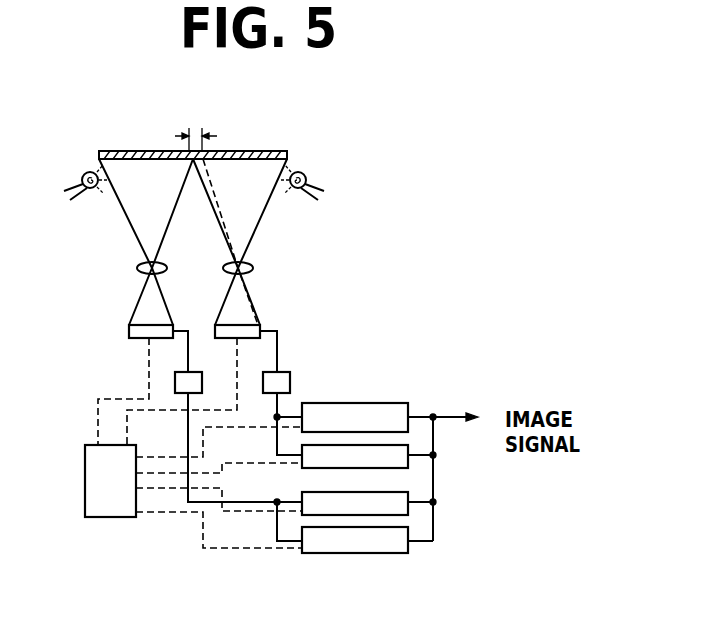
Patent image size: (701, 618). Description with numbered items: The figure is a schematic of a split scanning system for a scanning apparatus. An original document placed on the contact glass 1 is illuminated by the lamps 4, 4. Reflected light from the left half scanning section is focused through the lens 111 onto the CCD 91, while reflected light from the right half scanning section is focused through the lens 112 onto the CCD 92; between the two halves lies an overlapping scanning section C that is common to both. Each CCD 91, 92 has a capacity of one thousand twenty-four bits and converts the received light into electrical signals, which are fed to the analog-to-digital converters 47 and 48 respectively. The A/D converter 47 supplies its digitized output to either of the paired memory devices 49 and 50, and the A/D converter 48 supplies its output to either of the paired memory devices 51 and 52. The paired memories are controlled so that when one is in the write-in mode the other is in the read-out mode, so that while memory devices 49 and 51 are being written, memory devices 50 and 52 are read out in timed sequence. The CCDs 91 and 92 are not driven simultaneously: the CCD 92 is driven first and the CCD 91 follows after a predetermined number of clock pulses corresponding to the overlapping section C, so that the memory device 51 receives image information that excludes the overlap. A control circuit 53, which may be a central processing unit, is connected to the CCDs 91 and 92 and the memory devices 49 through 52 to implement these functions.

The contact glass 1 is at (130, 151).
The overlapping scanning section C is at (196, 126).
The lamp 4 is at (86, 173).
The lens 111 is at (137, 268).
The lens 112 is at (253, 268).
The CCD 91 is at (129, 331).
The CCD 92 is at (260, 326).
The analog-to-digital converter 47 is at (188, 388).
The analog-to-digital converter 48 is at (279, 386).
The memory device 51 is at (385, 414).
The memory device 52 is at (368, 458).
The memory device 49 is at (350, 503).
The memory device 50 is at (346, 548).
The control circuit 53 is at (108, 510).